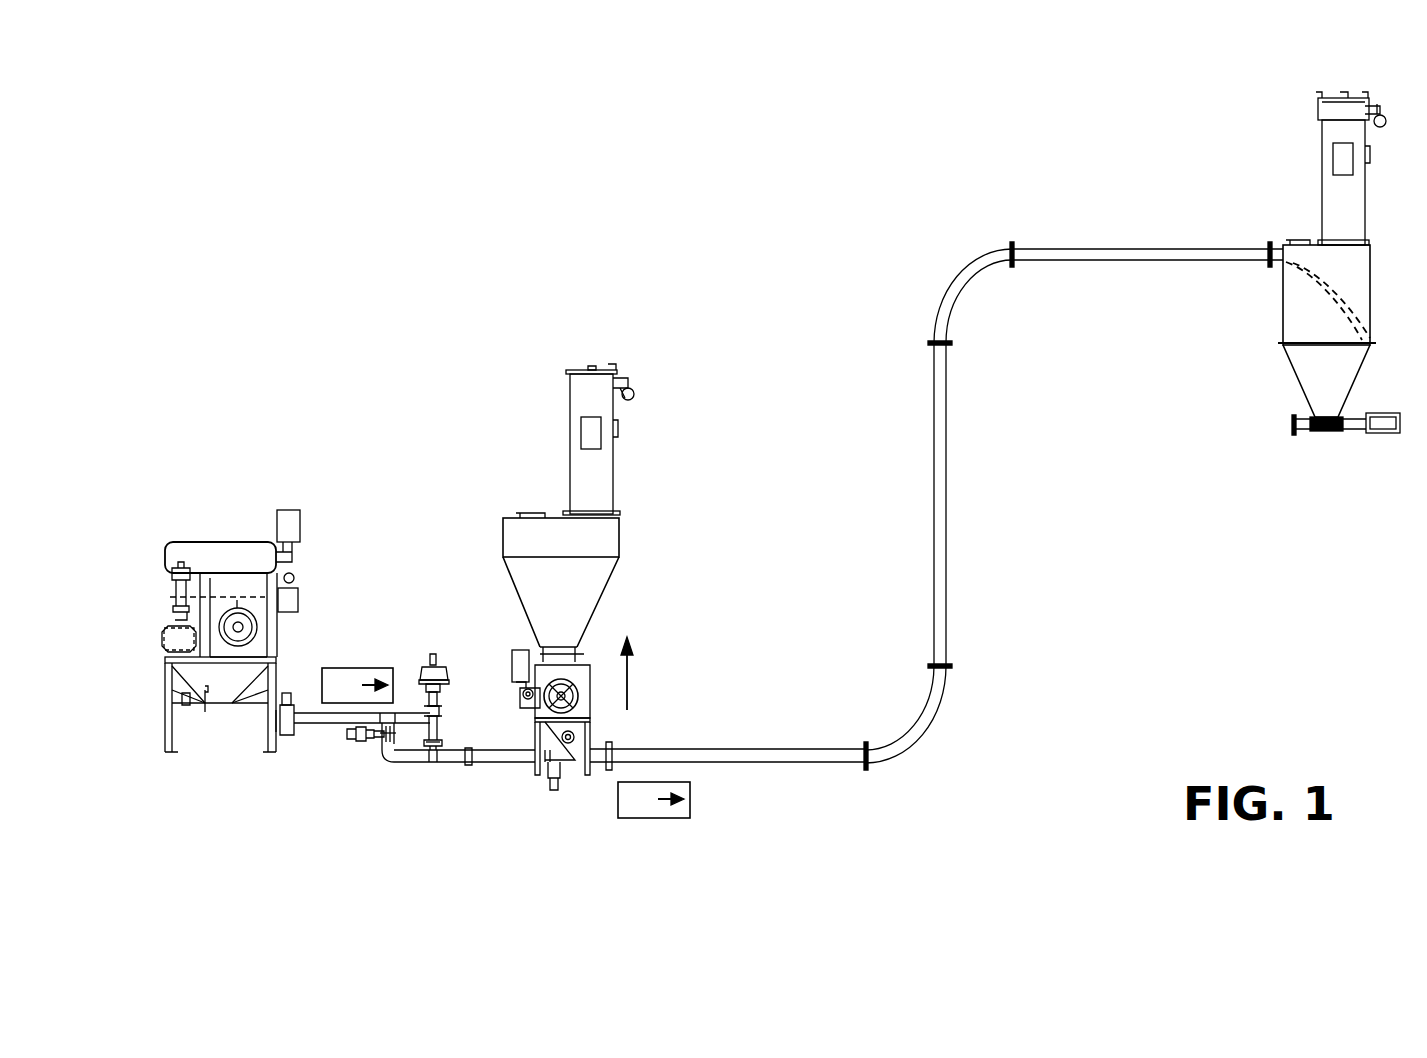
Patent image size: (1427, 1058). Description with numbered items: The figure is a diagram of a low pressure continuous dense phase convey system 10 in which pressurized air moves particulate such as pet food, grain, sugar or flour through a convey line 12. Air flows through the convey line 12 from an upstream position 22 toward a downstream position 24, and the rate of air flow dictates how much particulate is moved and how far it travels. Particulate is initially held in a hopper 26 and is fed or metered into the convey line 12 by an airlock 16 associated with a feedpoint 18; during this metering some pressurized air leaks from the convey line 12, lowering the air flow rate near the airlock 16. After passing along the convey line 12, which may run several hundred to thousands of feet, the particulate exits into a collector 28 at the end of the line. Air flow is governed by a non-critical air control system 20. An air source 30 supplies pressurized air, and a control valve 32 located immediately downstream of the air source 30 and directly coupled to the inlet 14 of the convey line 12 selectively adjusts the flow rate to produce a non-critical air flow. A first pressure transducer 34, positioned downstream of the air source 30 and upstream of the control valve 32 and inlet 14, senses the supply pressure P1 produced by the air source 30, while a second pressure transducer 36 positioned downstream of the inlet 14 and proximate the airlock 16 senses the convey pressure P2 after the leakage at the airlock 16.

The convey system 10 is at (434, 268).
The convey line 12 is at (946, 540).
The inlet 14 is at (437, 764).
The airlock 16 is at (577, 693).
The feedpoint 18 is at (573, 771).
The air control system 20 is at (377, 563).
The upstream position 22 is at (479, 835).
The downstream position 24 is at (948, 230).
The hopper 26 is at (605, 575).
The collector 28 is at (1358, 288).
The air source 30 is at (232, 618).
The control valve 32 is at (440, 710).
The first pressure transducer 34 is at (292, 697).
The second pressure transducer 36 is at (553, 791).